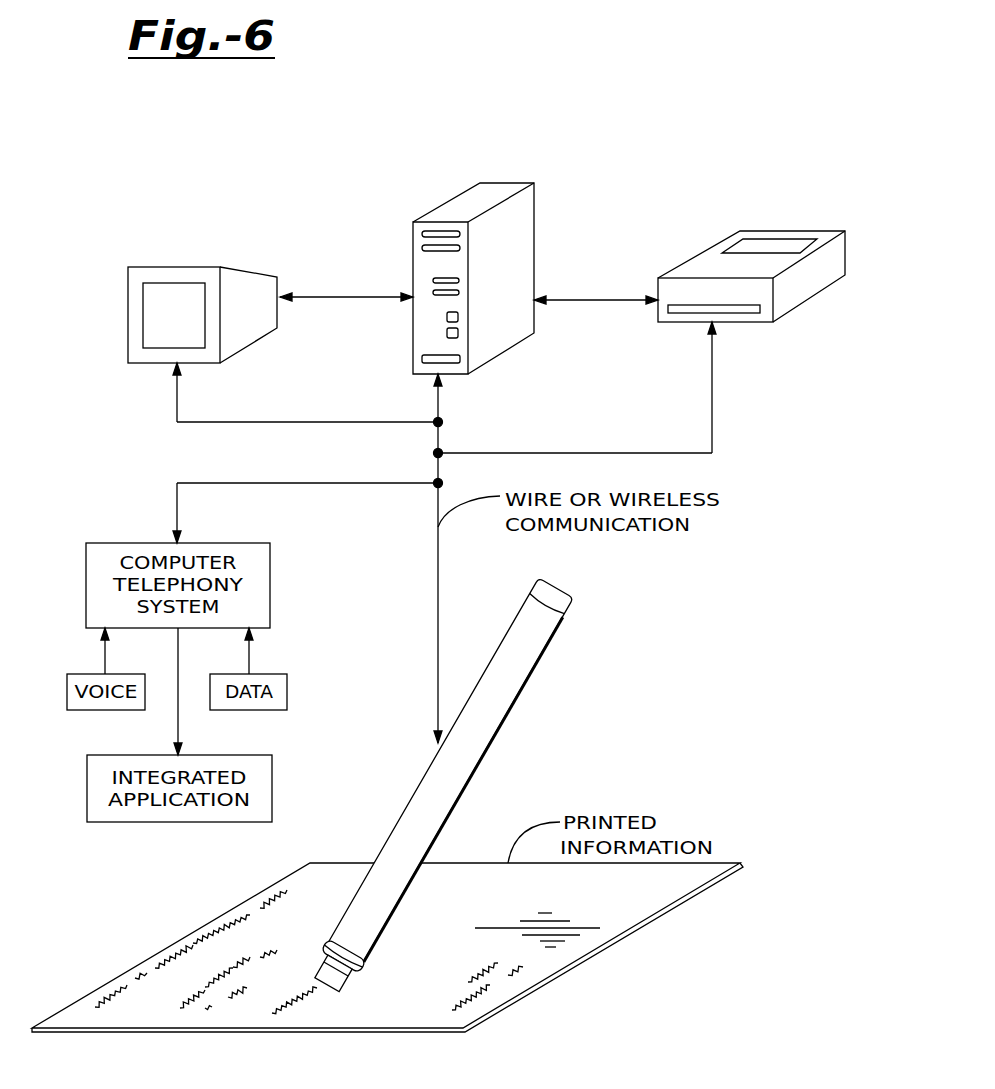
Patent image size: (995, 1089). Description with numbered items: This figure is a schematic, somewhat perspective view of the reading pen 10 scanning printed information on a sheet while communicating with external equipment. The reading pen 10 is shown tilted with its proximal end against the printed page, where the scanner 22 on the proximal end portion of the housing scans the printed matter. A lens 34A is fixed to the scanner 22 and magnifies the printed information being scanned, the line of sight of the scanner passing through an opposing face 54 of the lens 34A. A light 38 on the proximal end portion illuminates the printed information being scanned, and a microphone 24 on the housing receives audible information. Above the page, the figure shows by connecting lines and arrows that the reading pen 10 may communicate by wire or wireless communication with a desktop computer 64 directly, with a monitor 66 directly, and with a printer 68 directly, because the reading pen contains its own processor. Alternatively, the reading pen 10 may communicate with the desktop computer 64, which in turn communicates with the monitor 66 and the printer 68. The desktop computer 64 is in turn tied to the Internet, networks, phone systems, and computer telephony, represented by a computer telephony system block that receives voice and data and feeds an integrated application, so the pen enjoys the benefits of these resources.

The reading pen 10 is at (520, 775).
The scanner 22 is at (333, 973).
The microphone 24 is at (546, 605).
The lens 34A is at (336, 969).
The light 38 is at (343, 956).
The face of the lens 54 is at (322, 963).
The desktop computer 64 is at (510, 183).
The monitor 66 is at (247, 347).
The printer 68 is at (740, 322).